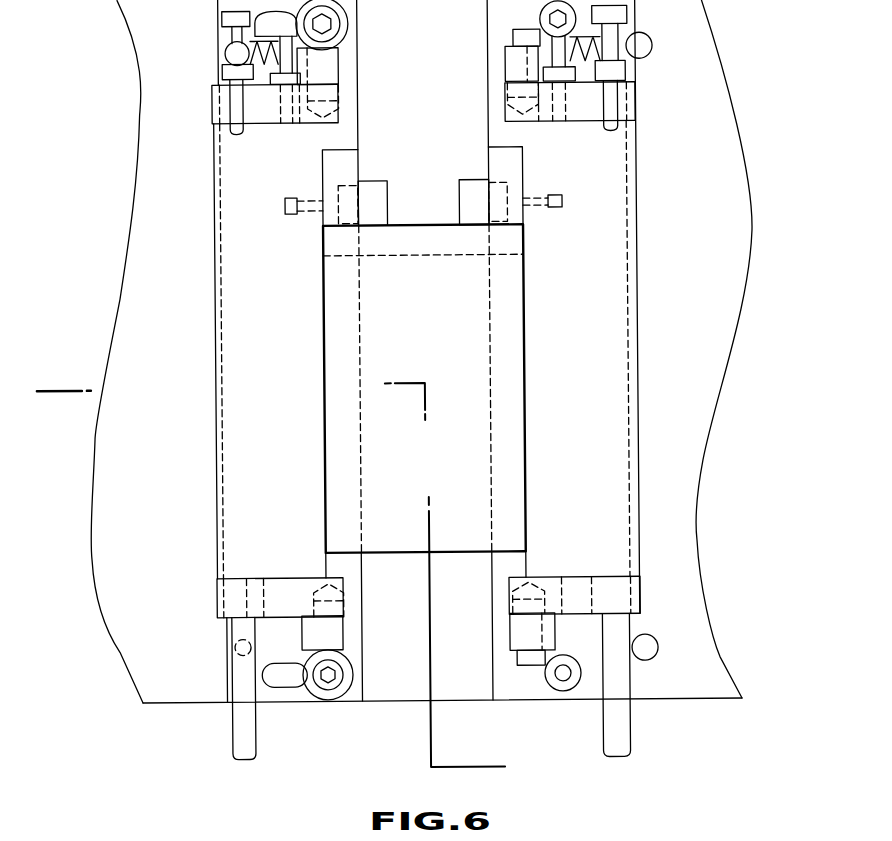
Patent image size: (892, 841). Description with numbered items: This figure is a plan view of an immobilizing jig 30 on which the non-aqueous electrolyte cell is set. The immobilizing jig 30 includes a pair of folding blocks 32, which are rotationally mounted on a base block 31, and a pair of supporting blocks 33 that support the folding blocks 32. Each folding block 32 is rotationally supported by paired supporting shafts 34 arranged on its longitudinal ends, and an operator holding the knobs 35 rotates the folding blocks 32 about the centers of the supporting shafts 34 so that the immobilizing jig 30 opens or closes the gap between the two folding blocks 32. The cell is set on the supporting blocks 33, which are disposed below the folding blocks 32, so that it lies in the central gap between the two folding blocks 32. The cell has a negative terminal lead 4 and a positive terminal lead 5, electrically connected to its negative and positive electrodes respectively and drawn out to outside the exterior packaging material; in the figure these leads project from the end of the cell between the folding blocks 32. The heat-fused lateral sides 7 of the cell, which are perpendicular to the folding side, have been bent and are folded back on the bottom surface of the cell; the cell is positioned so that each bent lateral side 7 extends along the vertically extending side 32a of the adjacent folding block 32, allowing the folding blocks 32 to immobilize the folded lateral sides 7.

The negative terminal lead 4 is at (373, 185).
The positive terminal lead 5 is at (472, 184).
The lateral side 7 is at (324, 417).
The immobilizing jig 30 is at (378, 705).
The base block 31 is at (700, 688).
The folding block 32 is at (227, 313).
The vertically extending side 32a is at (326, 158).
The supporting block 33 is at (288, 703).
The supporting shaft 34 is at (343, 68).
The knob 35 is at (230, 739).